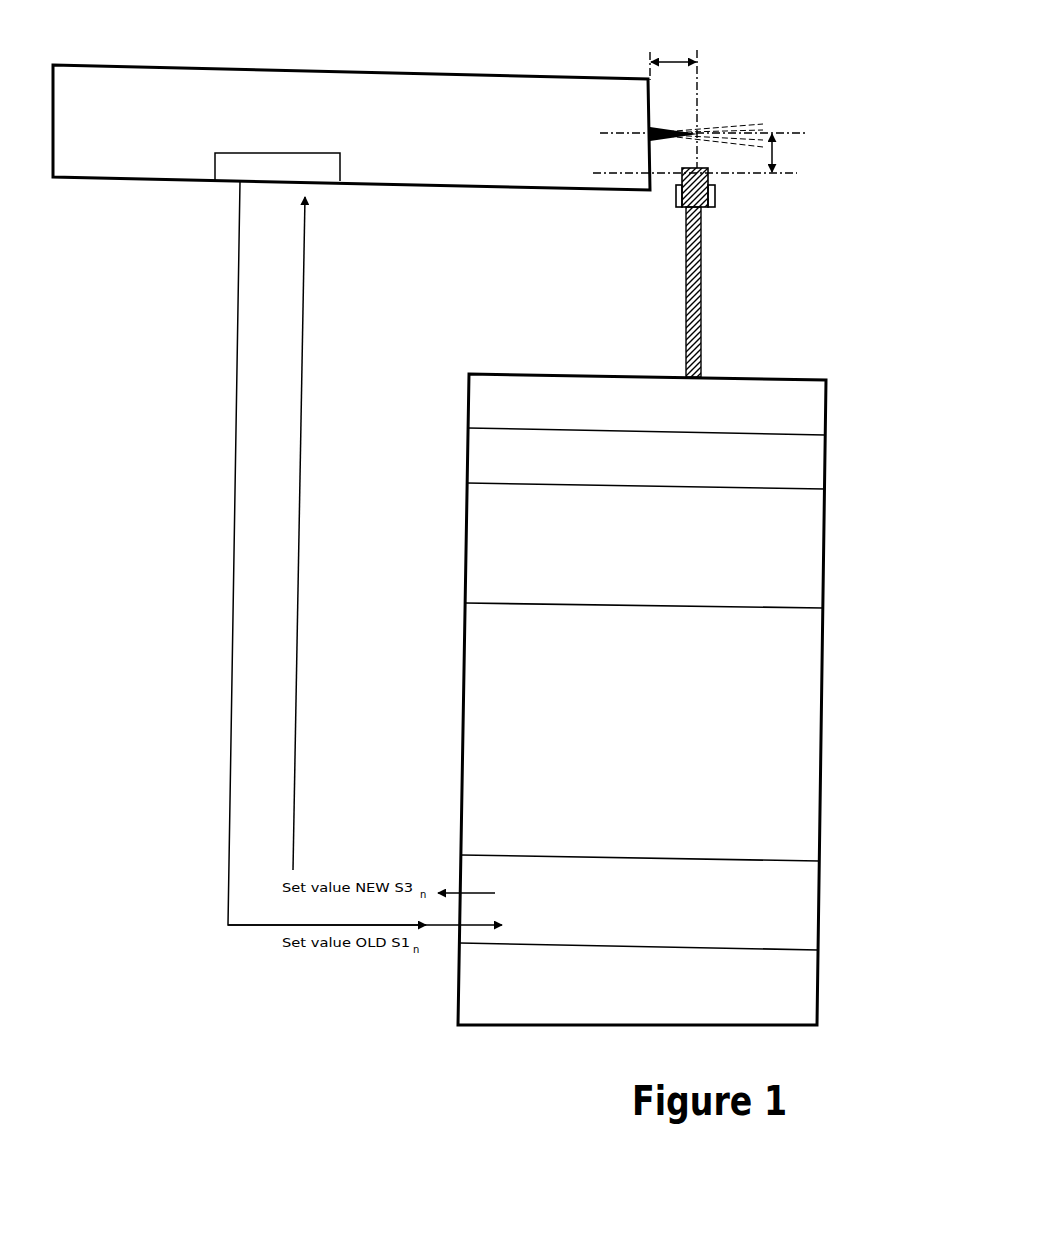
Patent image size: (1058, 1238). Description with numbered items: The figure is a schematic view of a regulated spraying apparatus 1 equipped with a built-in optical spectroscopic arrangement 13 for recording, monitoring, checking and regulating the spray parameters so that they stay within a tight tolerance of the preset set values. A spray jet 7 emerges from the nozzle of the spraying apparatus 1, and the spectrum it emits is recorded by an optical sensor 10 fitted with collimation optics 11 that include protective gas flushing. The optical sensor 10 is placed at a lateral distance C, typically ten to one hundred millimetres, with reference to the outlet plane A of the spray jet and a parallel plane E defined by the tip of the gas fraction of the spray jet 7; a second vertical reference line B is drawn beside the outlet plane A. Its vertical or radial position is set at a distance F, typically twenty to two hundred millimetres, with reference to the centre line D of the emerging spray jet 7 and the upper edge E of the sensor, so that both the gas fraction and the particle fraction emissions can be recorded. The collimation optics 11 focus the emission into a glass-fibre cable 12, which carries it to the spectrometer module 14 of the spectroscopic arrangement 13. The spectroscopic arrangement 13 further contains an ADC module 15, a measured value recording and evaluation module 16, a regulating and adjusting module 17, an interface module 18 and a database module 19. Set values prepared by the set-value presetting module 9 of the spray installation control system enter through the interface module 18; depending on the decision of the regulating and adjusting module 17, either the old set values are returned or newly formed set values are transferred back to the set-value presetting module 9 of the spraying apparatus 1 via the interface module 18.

The spraying apparatus 1 is at (124, 780).
The spray jet 7 is at (718, 130).
The set-value presetting module 9 is at (247, 172).
The optical sensor 10 is at (722, 201).
The collimation optics 11 is at (678, 193).
The glass-fibre cable 12 is at (687, 285).
The optical spectroscopic arrangement 13 is at (489, 369).
The spectrometer module 14 is at (493, 399).
The ADC module 15 is at (488, 459).
The measured value recording and evaluation module 16 is at (497, 547).
The regulating and adjusting module 17 is at (502, 747).
The interface module 18 is at (493, 883).
The database module 19 is at (495, 970).
The outlet plane A is at (648, 70).
The reference line B is at (698, 72).
The lateral distance C is at (663, 58).
The centre line D is at (807, 137).
The plane parallel to the outlet plane E is at (802, 177).
The distance F is at (783, 157).